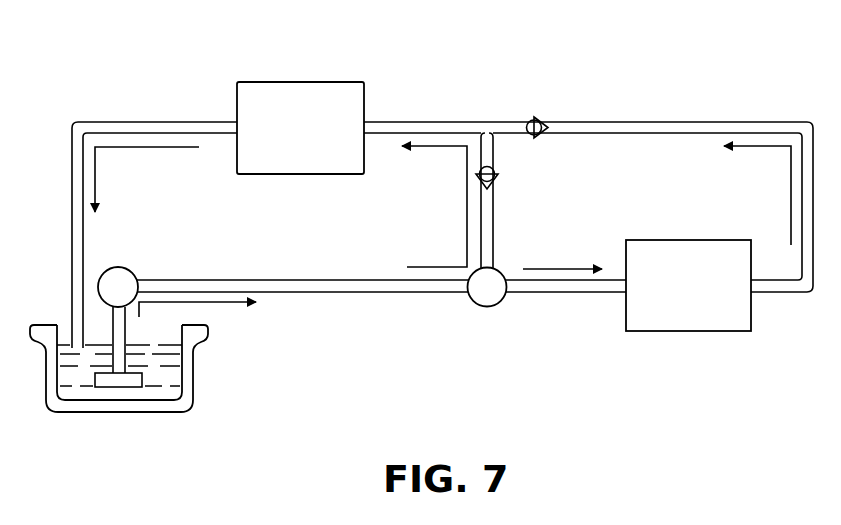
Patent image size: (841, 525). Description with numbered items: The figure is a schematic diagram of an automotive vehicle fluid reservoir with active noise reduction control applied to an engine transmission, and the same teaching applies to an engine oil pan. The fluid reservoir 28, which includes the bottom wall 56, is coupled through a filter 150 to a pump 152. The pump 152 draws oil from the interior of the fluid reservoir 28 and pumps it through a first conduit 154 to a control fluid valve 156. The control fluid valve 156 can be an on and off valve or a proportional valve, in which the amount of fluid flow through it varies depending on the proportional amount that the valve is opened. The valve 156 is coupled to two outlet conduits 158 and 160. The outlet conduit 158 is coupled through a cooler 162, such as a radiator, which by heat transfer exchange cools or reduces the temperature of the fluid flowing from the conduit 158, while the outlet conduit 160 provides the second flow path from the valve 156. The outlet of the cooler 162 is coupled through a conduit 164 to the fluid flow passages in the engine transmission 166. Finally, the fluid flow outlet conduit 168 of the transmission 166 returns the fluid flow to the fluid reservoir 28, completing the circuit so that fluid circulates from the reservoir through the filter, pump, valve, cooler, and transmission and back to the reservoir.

The engine transmission 166 is at (272, 93).
The conduit 164 is at (630, 127).
The conduit 168 is at (78, 151).
The outlet conduit 160 is at (492, 218).
The cooler 162 is at (738, 314).
The pump 152 is at (130, 268).
The first conduit 154 is at (343, 283).
The control fluid valve 156 is at (495, 306).
The outlet conduit 158 is at (585, 287).
The bottom wall 56 is at (103, 405).
The filter 150 is at (130, 380).
The fluid reservoir 28 is at (214, 381).